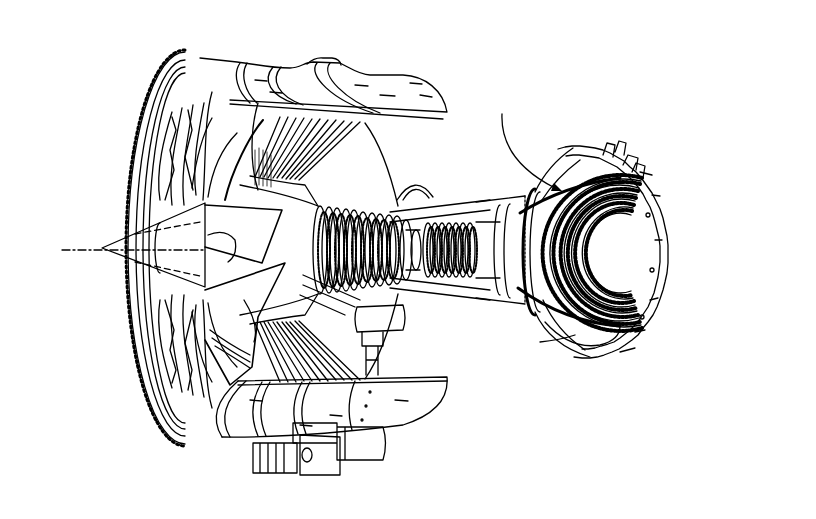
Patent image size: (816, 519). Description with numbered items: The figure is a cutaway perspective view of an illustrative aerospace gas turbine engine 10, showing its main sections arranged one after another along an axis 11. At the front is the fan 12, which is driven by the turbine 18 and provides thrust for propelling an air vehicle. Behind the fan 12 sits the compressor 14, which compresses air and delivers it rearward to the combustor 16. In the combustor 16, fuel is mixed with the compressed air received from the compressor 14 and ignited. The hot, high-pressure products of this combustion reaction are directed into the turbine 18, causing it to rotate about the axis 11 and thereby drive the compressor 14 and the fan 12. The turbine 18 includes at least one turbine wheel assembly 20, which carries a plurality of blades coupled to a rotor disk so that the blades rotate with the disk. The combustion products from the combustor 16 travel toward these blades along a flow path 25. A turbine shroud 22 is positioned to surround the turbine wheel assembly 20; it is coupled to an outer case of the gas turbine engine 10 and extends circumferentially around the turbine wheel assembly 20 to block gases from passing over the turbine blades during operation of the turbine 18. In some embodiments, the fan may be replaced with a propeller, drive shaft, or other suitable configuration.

The gas turbine engine 10 is at (668, 80).
The axis 11 is at (66, 246).
The fan 12 is at (163, 124).
The compressor 14 is at (367, 197).
The combustor 16 is at (479, 212).
The turbine 18 is at (603, 175).
The turbine wheel assembly 20 is at (577, 325).
The turbine shroud 22 is at (522, 310).
The flow path 25 is at (487, 210).